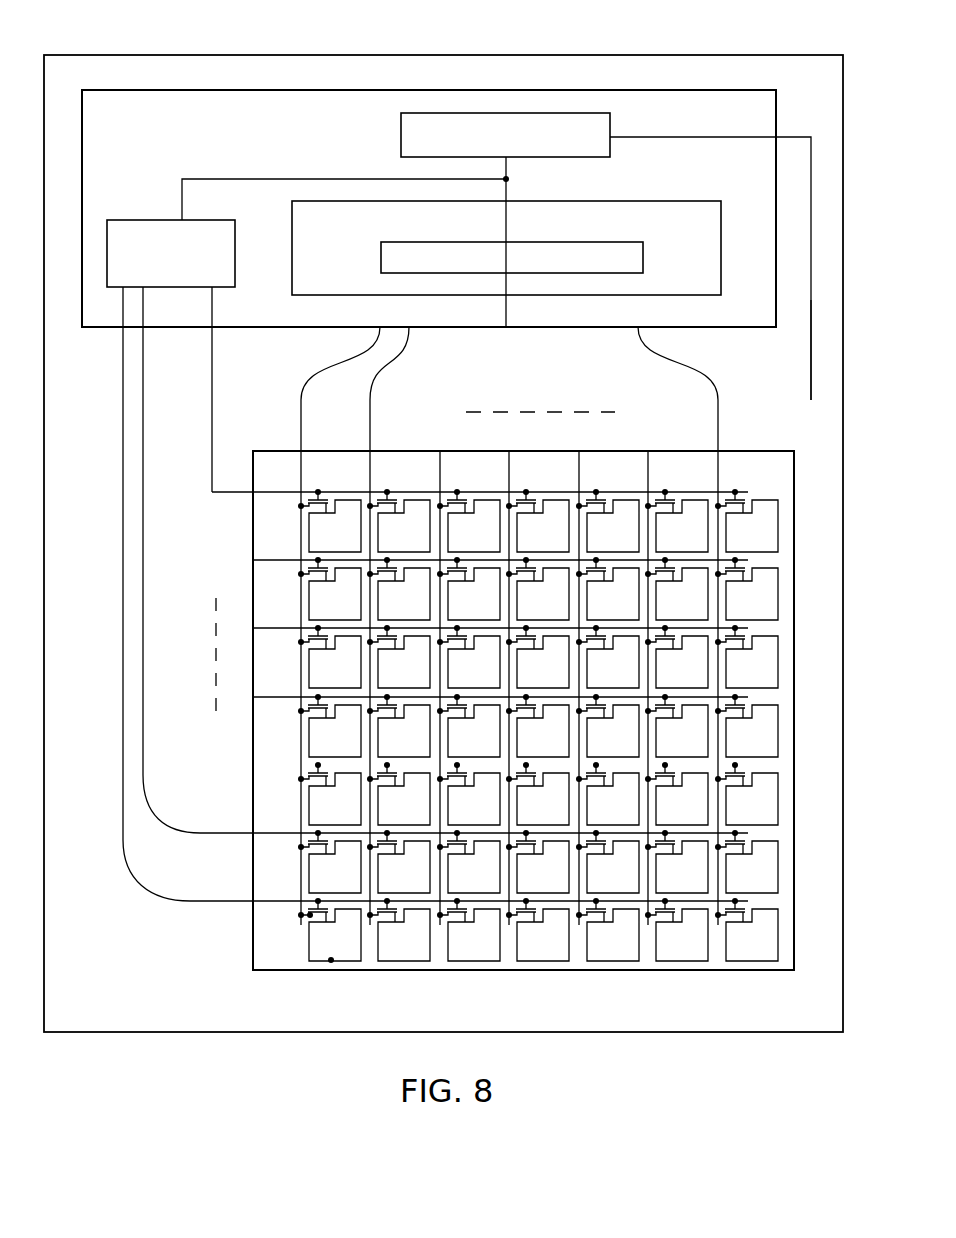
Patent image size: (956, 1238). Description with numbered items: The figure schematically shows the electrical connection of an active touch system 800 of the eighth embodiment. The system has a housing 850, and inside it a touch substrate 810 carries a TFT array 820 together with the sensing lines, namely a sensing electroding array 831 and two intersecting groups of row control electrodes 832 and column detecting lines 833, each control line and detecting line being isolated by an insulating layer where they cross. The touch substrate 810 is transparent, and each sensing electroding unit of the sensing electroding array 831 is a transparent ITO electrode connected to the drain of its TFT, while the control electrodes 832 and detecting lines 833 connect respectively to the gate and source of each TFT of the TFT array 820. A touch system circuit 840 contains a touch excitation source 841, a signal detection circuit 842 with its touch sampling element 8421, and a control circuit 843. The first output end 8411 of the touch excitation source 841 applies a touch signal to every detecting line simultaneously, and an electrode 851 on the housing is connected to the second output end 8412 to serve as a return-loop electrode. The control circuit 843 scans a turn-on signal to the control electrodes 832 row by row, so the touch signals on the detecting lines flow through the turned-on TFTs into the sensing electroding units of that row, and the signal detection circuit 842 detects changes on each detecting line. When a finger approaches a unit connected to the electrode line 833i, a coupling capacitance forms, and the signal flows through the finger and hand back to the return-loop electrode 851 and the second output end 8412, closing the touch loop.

The active touch system 800 is at (443, 528).
The housing 850 is at (443, 543).
The touch system circuit 840 is at (429, 208).
The touch excitation source 841 is at (505, 135).
The second output end 8412 is at (710, 257).
The first output end 8411 is at (345, 241).
The signal detection circuit 842 is at (506, 248).
The touch sampling element 8421 is at (512, 257).
The control circuit 843 is at (171, 530).
The electrode 851 is at (804, 363).
The column detecting lines 833 is at (509, 626).
The electrode line 833i is at (577, 674).
The row control electrodes 832 is at (435, 696).
The TFT array 820 is at (310, 915).
The touch substrate 810 is at (253, 970).
The sensing electroding array 831 is at (331, 960).